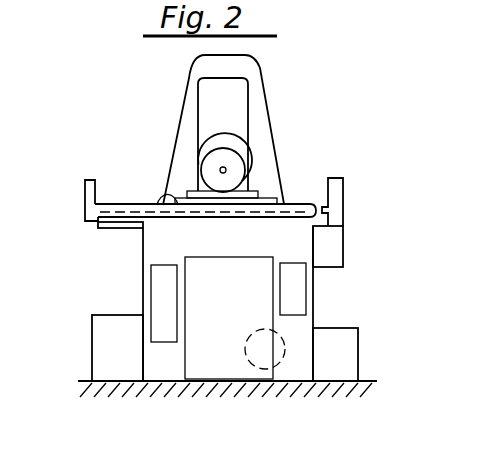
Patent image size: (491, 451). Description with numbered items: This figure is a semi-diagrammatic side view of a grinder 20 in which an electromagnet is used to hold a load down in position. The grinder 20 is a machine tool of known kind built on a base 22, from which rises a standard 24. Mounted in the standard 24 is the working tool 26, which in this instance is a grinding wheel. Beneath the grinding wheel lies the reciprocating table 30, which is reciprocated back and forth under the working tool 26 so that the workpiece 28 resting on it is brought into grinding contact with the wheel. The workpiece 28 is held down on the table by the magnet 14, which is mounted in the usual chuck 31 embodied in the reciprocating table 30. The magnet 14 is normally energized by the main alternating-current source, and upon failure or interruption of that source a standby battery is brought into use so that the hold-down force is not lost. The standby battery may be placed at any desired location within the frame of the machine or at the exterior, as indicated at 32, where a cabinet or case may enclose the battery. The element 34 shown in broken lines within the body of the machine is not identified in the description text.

The magnet 14 is at (163, 207).
The grinder 20 is at (153, 126).
The base 22 is at (81, 326).
The standard 24 is at (249, 104).
The working tool 26 is at (237, 163).
The workpiece 28 is at (256, 196).
The reciprocating table 30 is at (71, 213).
The chuck 31 is at (125, 210).
The standby battery location 32 is at (346, 352).
The drive motor 34 is at (246, 357).